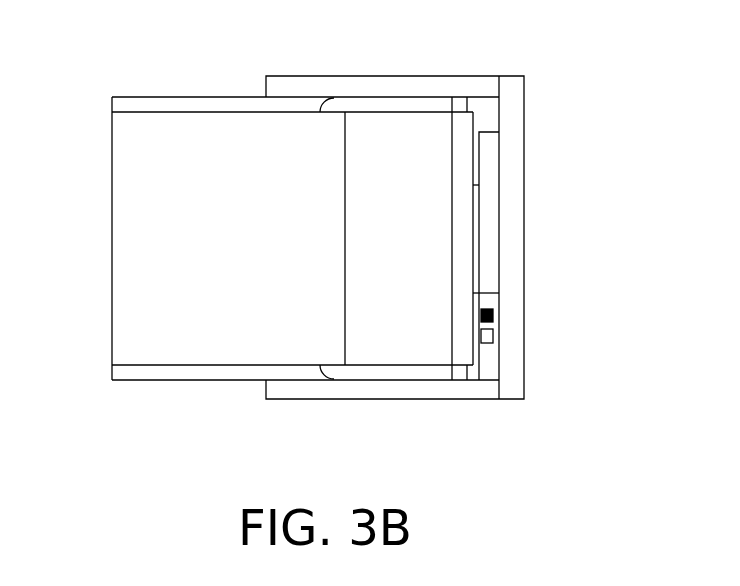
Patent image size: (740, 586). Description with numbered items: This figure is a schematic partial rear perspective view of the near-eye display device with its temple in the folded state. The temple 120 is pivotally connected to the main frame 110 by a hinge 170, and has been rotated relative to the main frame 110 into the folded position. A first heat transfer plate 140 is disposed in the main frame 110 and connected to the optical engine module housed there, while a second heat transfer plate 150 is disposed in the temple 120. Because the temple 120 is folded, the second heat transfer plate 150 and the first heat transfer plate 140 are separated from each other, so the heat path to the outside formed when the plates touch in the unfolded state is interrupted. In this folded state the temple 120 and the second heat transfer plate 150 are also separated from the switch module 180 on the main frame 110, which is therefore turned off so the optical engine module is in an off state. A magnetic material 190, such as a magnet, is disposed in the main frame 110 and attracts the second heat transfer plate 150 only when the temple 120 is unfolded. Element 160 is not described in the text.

The main frame 110 is at (511, 152).
The temple 120 is at (202, 143).
The first heat transfer plate 140 is at (488, 195).
The second heat transfer plate 150 is at (391, 125).
The flexible display 160 is at (148, 104).
The hinge 170 is at (461, 107).
The switch module 180 is at (488, 338).
The magnetic material 190 is at (493, 313).